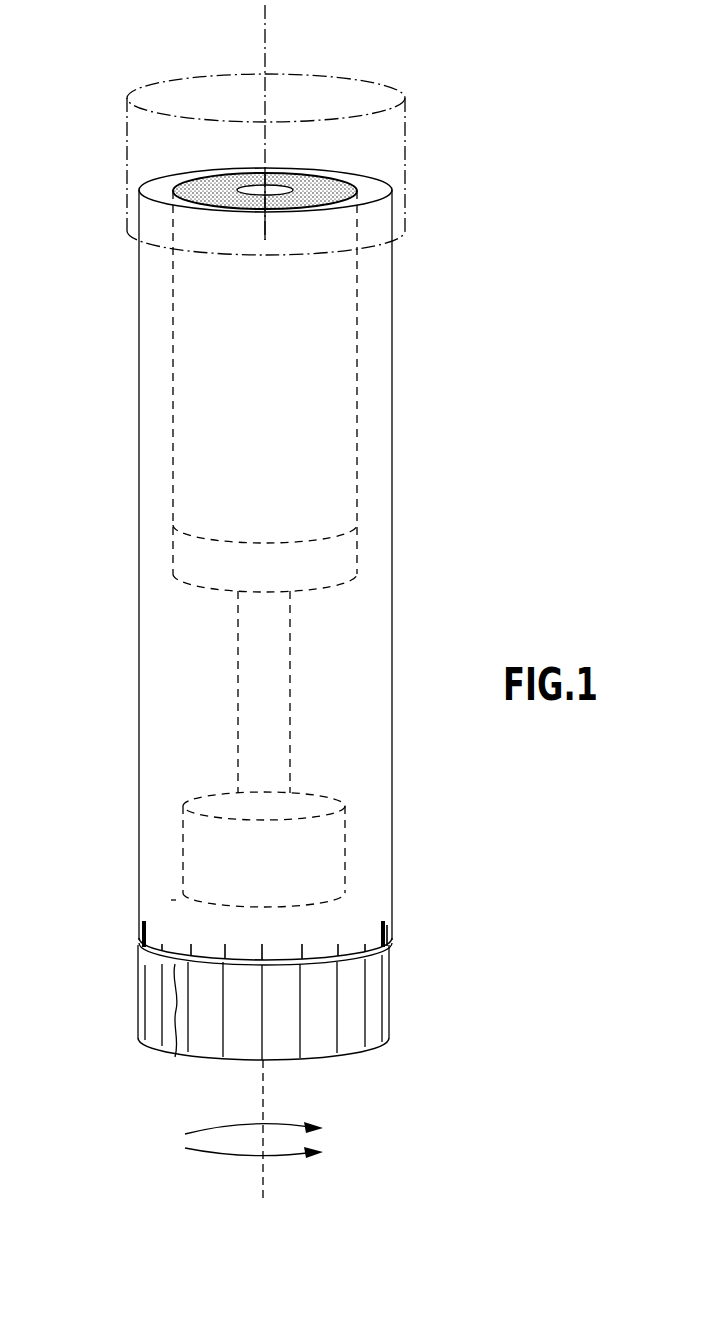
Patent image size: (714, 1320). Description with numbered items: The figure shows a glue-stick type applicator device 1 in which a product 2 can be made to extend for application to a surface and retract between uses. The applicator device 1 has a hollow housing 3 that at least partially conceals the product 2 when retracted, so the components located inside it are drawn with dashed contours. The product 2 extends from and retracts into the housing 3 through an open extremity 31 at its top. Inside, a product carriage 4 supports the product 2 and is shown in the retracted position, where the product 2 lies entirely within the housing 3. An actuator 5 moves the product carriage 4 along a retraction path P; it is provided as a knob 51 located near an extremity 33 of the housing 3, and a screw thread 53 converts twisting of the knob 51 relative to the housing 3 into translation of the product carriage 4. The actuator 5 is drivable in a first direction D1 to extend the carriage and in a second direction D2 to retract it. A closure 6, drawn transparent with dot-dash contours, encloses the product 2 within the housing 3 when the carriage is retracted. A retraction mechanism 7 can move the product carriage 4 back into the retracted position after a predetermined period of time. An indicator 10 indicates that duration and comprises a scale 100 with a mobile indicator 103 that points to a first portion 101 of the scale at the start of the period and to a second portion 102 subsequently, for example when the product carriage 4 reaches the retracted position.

The applicator device 1 is at (500, 481).
The product 2 is at (330, 182).
The housing 3 is at (139, 614).
The open extremity 31 is at (160, 184).
The extremity of the housing 33 is at (131, 932).
The product carriage 4 is at (330, 560).
The actuator 5 is at (129, 1028).
The knob 51 is at (143, 1002).
The screw thread 53 is at (276, 695).
The closure 6 is at (137, 87).
The retraction mechanism 7 is at (348, 822).
The indicator 10 is at (173, 901).
The scale 100 is at (402, 921).
The first portion of the scale 101 is at (372, 918).
The second portion of the scale 102 is at (157, 911).
The indicator 103 is at (175, 1057).
The retraction path P is at (265, 20).
The first direction D1 is at (238, 1126).
The second direction D2 is at (236, 1158).